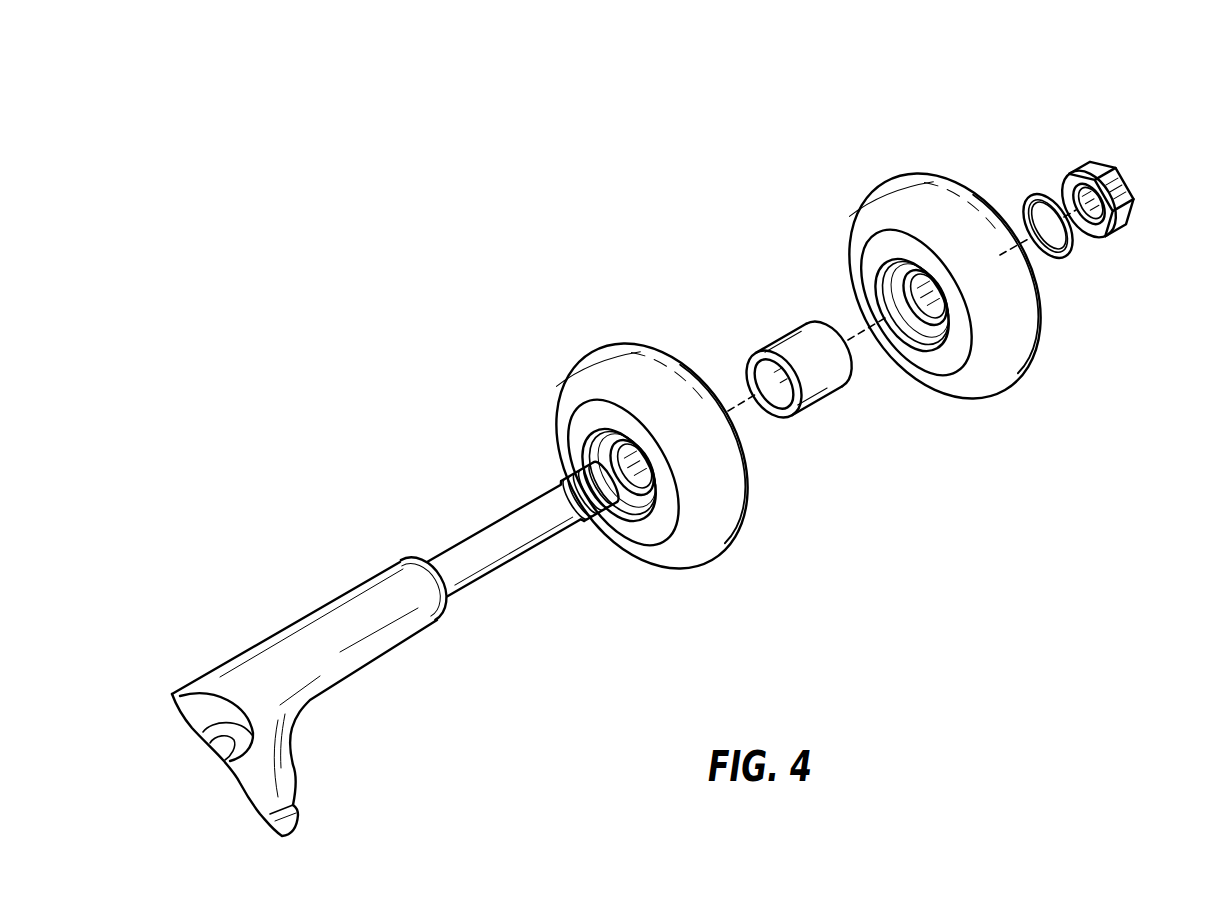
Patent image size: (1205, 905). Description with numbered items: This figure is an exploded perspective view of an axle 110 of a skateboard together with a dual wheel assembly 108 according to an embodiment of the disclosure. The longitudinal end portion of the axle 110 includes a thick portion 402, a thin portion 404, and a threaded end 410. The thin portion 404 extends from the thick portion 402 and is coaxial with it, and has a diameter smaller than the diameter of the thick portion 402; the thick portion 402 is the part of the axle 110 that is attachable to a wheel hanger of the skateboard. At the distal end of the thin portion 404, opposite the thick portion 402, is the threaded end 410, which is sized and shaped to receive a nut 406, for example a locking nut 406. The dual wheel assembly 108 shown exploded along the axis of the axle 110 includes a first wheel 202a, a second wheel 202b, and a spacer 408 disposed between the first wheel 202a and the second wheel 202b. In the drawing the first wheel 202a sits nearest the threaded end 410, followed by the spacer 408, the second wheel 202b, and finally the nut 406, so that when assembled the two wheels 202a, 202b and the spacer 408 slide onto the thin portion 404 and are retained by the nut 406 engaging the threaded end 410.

The dual wheel assembly 108 is at (690, 145).
The axle 110 is at (268, 602).
The first wheel 202a is at (625, 350).
The second wheel 202b is at (930, 185).
The thick portion 402 is at (387, 595).
The thin portion 404 is at (498, 535).
The nut 406 is at (1110, 186).
The spacer 408 is at (805, 355).
The threaded end 410 is at (585, 530).